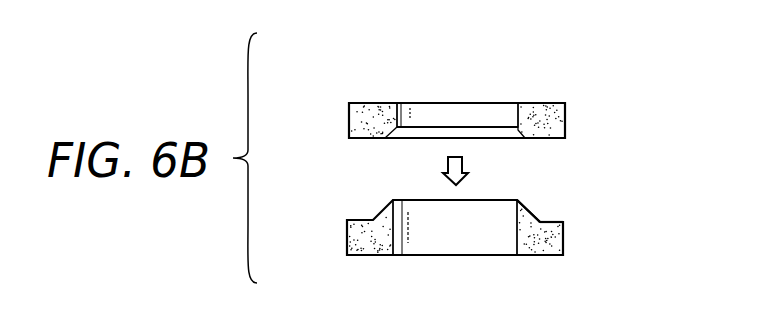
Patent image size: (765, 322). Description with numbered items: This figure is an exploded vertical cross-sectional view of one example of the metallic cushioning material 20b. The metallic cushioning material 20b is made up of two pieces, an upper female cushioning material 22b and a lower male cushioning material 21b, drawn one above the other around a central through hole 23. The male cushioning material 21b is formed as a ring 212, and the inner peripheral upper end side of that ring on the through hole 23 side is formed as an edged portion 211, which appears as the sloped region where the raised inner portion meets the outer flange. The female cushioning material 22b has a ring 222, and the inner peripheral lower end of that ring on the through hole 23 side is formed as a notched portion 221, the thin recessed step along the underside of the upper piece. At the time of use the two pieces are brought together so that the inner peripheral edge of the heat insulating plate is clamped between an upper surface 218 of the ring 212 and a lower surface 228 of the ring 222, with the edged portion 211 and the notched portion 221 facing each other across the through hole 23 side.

The metallic cushioning material 20b is at (589, 167).
The female cushioning material 22b is at (523, 97).
The ring 222 is at (566, 117).
The lower surface 228 is at (552, 140).
The notched portion 221 is at (523, 139).
The male cushioning material 21b is at (565, 240).
The edged portion 211 is at (529, 205).
The upper surface 218 is at (541, 222).
The ring 212 is at (539, 256).
The through hole 23 is at (463, 115).